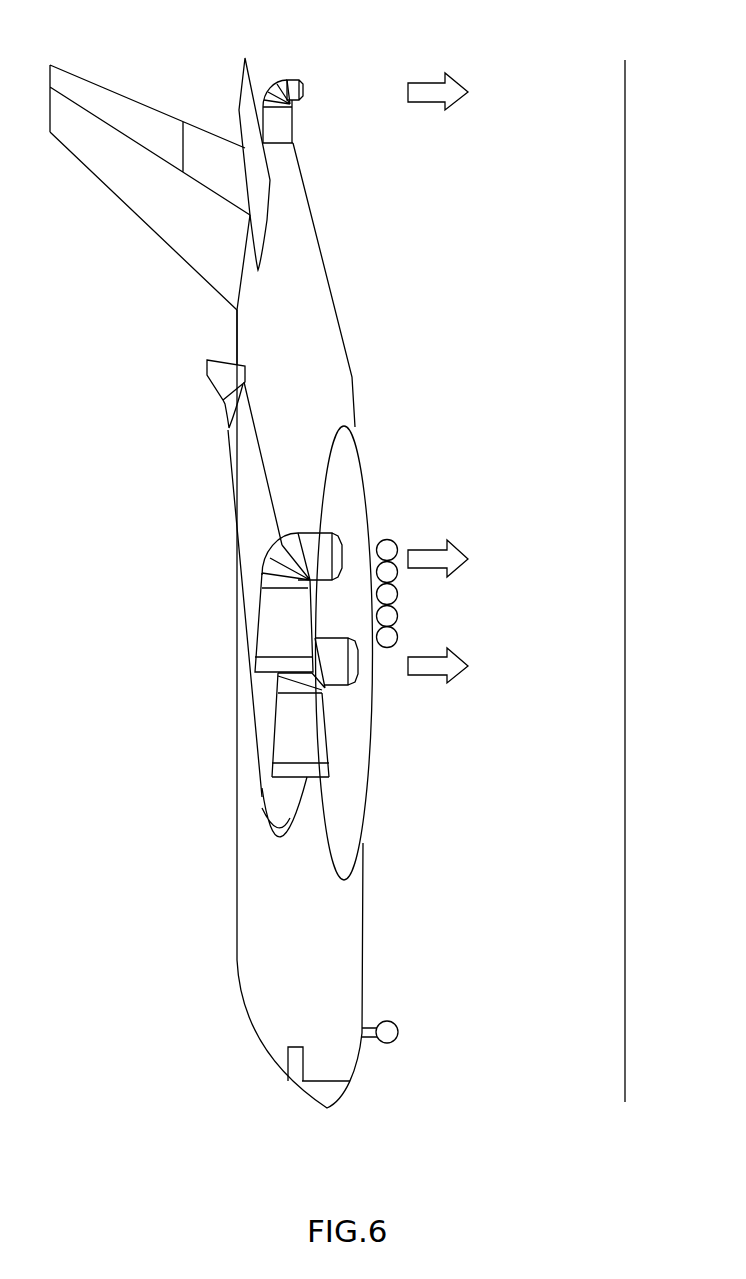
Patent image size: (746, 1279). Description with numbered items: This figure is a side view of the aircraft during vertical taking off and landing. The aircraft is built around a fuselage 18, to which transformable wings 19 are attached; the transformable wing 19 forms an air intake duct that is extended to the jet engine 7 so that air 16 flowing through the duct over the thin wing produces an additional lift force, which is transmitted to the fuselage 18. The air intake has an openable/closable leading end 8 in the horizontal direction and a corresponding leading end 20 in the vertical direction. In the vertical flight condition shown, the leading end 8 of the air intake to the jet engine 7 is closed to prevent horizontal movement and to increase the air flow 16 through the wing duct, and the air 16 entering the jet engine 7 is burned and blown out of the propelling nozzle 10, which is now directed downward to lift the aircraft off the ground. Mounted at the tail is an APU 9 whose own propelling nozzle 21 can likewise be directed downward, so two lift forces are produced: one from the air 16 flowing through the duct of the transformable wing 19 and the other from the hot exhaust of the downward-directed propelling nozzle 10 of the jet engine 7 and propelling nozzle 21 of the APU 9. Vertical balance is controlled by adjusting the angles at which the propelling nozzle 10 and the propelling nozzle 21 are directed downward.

The jet engine 7 is at (282, 628).
The openable/closable leading end of the air intake duct in horizontal direction 8 is at (298, 772).
The APU 9 is at (278, 125).
The propelling nozzle 10 is at (282, 559).
The air flow 16 is at (420, 91).
The fuselage 18 is at (300, 893).
The transformable wings 19 is at (263, 702).
The openable/closable leading end of the air intake duct in vertical direction 20 is at (273, 830).
The propelling nozzle 21 is at (279, 90).